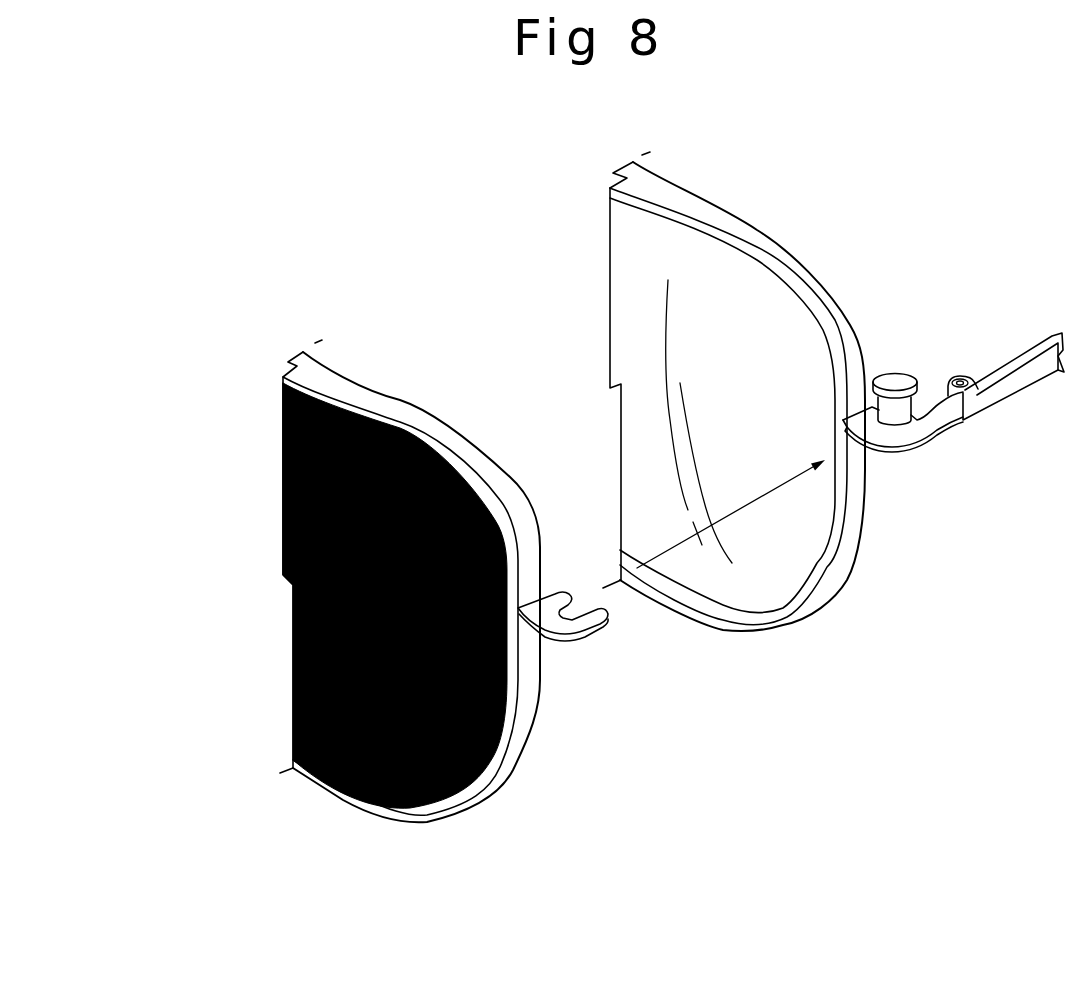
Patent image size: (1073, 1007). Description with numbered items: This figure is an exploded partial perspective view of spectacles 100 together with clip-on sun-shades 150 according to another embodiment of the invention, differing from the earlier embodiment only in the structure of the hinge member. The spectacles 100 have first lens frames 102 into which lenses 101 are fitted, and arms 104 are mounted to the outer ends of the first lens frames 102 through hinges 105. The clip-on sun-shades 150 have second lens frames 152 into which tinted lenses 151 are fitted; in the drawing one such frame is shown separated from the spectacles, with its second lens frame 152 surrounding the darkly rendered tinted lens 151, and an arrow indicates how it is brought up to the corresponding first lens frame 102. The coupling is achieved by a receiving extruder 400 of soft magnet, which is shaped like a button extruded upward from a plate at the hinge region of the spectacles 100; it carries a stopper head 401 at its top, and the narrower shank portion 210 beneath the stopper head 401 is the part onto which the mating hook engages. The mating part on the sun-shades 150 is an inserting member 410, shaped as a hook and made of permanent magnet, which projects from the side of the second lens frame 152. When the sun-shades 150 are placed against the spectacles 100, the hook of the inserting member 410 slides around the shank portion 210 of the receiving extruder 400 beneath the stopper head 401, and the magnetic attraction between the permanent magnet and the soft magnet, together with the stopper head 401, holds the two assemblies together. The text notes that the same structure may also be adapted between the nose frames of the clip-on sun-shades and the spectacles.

The spectacles 100 is at (833, 449).
The lens 101 is at (770, 593).
The first lens frame 102 is at (853, 523).
The arm 104 is at (992, 402).
The hinge 105 is at (962, 378).
The clip-on sun-shades 150 is at (397, 634).
The tinted lens 151 is at (385, 805).
The second lens frame 152 is at (500, 763).
The hinge pin 210 is at (900, 418).
The receiving extruder 400 is at (914, 377).
The stopper head 401 is at (888, 372).
The inserting member 410 is at (603, 627).